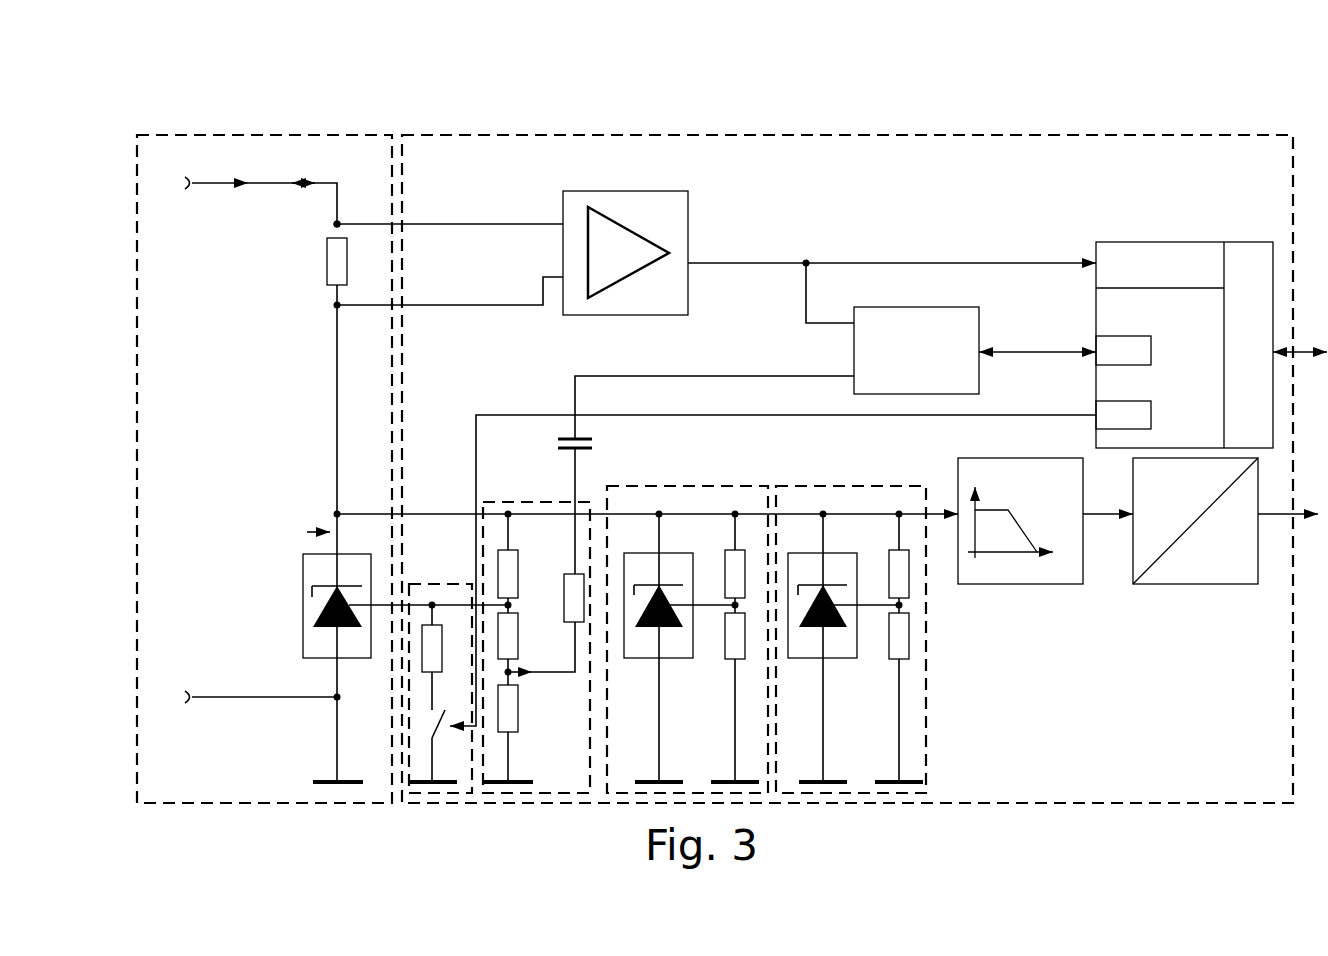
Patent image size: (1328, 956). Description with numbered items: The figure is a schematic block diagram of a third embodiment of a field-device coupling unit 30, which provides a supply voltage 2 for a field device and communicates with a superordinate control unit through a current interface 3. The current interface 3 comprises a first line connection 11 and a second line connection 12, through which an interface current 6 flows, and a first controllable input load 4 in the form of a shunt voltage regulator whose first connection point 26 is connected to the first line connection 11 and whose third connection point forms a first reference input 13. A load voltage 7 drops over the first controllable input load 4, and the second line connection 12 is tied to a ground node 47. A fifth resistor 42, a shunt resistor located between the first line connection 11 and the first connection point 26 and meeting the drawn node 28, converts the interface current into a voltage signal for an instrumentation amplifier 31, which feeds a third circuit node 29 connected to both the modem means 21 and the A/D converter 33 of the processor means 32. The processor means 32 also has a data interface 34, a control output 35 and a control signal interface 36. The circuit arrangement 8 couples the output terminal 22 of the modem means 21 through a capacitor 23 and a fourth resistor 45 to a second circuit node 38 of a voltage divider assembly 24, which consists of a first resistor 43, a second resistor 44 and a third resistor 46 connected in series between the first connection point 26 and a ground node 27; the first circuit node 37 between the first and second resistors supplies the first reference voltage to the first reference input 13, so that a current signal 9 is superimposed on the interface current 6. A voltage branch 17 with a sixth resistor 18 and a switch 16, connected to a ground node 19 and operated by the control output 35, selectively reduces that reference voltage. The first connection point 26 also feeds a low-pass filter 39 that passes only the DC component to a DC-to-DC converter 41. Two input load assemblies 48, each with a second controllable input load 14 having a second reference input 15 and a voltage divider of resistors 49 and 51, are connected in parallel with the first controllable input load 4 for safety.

The field-device coupling unit 30 is at (193, 92).
The current interface 3 is at (264, 457).
The circuit arrangement 8 is at (847, 457).
The first line connection 11 is at (197, 174).
The second line connection 12 is at (176, 689).
The interface current 6 is at (240, 168).
The current signal 9 is at (303, 168).
The node 28 is at (322, 225).
The fifth resistor 42 is at (337, 261).
The first connection point 26 is at (323, 503).
The load voltage 7 is at (310, 533).
The first controllable input load 4 is at (328, 605).
The first reference input 13 is at (428, 596).
The ground node 47 is at (340, 768).
The instrumentation amplifier 31 is at (624, 239).
The third circuit node 29 is at (892, 251).
The modem means 21 is at (916, 338).
The output terminal 22 is at (714, 396).
The capacitor 23 is at (560, 448).
The processor means 32 is at (1184, 332).
The A/D converter 33 is at (1160, 270).
The data interface 34 is at (1123, 350).
The control output 35 is at (800, 563).
The control signal interface 36 is at (1284, 343).
The low-pass filter 39 is at (1020, 510).
The DC-to-DC converter 41 is at (1181, 521).
The supply voltage 2 is at (1288, 499).
The voltage branch 17 is at (440, 676).
The sixth resistor 18 is at (432, 648).
The switch 16 is at (428, 724).
The ground node 19 is at (435, 769).
The voltage divider assembly 24 is at (536, 636).
The first resistor 43 is at (508, 574).
The second resistor 44 is at (508, 636).
The third resistor 46 is at (508, 708).
The fourth resistor 45 is at (574, 598).
The first circuit node 37 is at (528, 605).
The second circuit node 38 is at (526, 662).
The ground node 27 is at (511, 769).
The input load assembly 48 is at (766, 626).
The second controllable input load 14 is at (740, 594).
The second reference input 15 is at (784, 593).
The resistor 49 is at (817, 574).
The resistor 51 is at (817, 636).